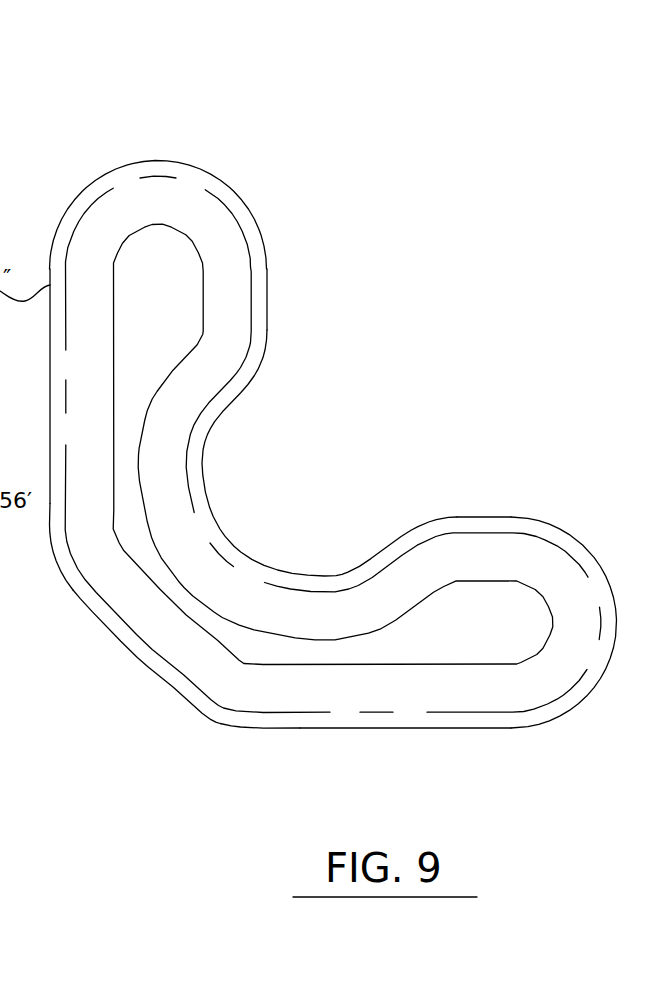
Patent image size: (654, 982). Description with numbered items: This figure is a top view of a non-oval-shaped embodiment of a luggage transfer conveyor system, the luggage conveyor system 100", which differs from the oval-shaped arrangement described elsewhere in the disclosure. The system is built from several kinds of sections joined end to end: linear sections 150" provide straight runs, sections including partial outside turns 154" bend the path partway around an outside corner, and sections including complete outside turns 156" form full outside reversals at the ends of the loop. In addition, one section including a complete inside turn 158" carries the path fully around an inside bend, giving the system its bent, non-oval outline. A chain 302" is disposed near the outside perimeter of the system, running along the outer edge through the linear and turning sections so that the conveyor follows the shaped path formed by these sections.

The luggage conveyor system 100 is at (338, 147).
The linear sections 150 is at (134, 650).
The sections including partial outside turns 154 is at (64, 584).
The sections including complete outside turns 156 is at (172, 161).
The section including a complete inside turn 158 is at (233, 541).
The chain 302 is at (250, 293).